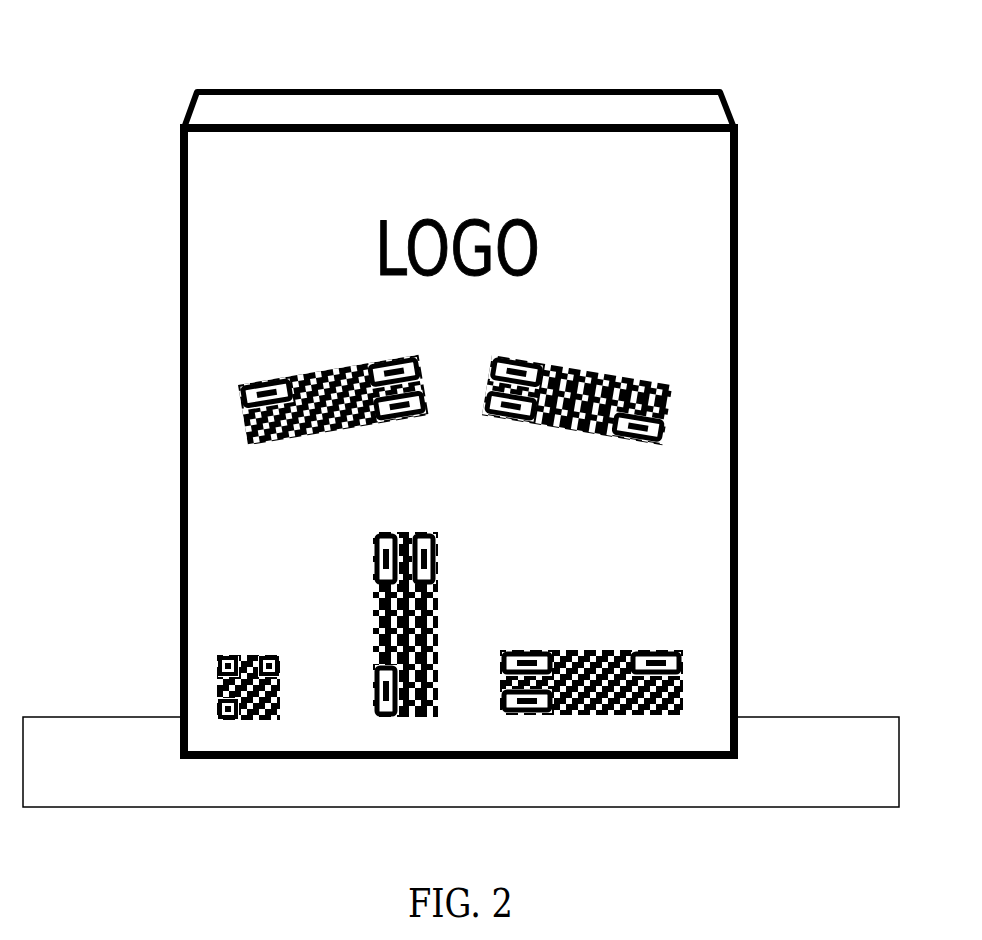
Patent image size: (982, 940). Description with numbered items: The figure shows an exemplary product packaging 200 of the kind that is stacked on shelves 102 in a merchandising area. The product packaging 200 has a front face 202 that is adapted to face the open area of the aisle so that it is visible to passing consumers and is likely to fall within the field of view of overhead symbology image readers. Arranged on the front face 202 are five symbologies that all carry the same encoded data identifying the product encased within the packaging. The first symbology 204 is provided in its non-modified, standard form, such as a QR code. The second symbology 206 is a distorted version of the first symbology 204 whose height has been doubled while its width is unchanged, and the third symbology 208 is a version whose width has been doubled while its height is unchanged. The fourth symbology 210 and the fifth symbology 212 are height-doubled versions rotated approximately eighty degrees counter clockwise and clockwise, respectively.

The shelves 102 is at (102, 780).
The product packaging 200 is at (207, 112).
The front face 202 is at (200, 210).
The first symbology 204 is at (267, 655).
The second symbology 206 is at (373, 565).
The third symbology 208 is at (618, 650).
The fourth symbology 210 is at (600, 378).
The fifth symbology 212 is at (323, 372).